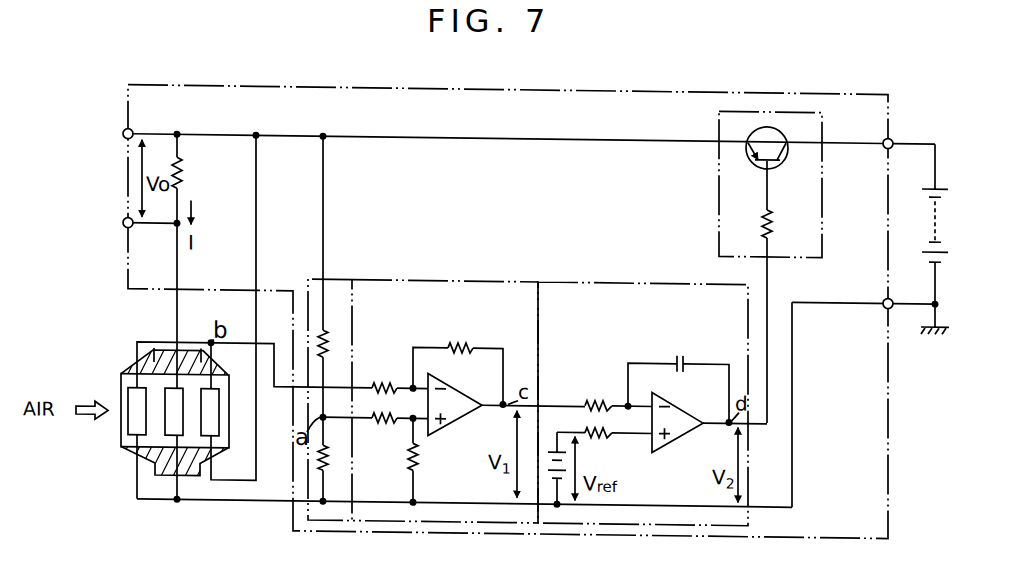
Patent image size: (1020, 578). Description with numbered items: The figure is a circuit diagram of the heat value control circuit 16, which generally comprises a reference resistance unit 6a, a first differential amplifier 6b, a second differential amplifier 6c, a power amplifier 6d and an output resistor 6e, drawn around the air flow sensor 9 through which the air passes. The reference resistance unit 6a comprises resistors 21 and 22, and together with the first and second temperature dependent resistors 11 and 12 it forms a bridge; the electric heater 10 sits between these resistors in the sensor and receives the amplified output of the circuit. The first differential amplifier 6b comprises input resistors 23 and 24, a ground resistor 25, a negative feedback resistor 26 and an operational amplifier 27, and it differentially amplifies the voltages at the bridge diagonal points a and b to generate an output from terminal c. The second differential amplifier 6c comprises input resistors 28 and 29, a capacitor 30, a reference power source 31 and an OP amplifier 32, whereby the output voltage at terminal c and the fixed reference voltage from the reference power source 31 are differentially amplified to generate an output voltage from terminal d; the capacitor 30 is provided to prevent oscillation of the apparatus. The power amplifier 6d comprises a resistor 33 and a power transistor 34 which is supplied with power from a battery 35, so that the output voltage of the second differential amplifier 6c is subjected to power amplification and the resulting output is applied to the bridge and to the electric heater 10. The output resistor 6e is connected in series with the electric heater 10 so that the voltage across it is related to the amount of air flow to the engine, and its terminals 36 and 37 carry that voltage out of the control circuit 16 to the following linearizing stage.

The air flow sensor 9 is at (166, 473).
The electric heater 10 is at (165, 431).
The first temperature dependent resistor 11 is at (219, 420).
The second temperature dependent resistor 12 is at (128, 425).
The heat value control circuit 16 is at (553, 83).
The reference resistance unit 6a is at (341, 275).
The first differential amplifier 6b is at (455, 275).
The second differential amplifier 6c is at (600, 275).
The power amplifier 6d is at (719, 238).
The output resistor 6e is at (182, 183).
The resistor 21 is at (328, 333).
The resistor 22 is at (328, 456).
The input resistor 23 is at (376, 381).
The input resistor 24 is at (376, 416).
The ground resistor 25 is at (428, 447).
The negative feedback resistor 26 is at (470, 340).
The operational amplifier 27 is at (452, 418).
The input resistor 28 is at (590, 392).
The input resistor 29 is at (604, 430).
The capacitor 30 is at (680, 347).
The reference power source 31 is at (551, 447).
The OP amplifier 32 is at (678, 433).
The resistor 33 is at (772, 213).
The power transistor 34 is at (781, 153).
The battery 35 is at (929, 232).
The terminal 36 is at (123, 132).
The terminal 37 is at (123, 221).